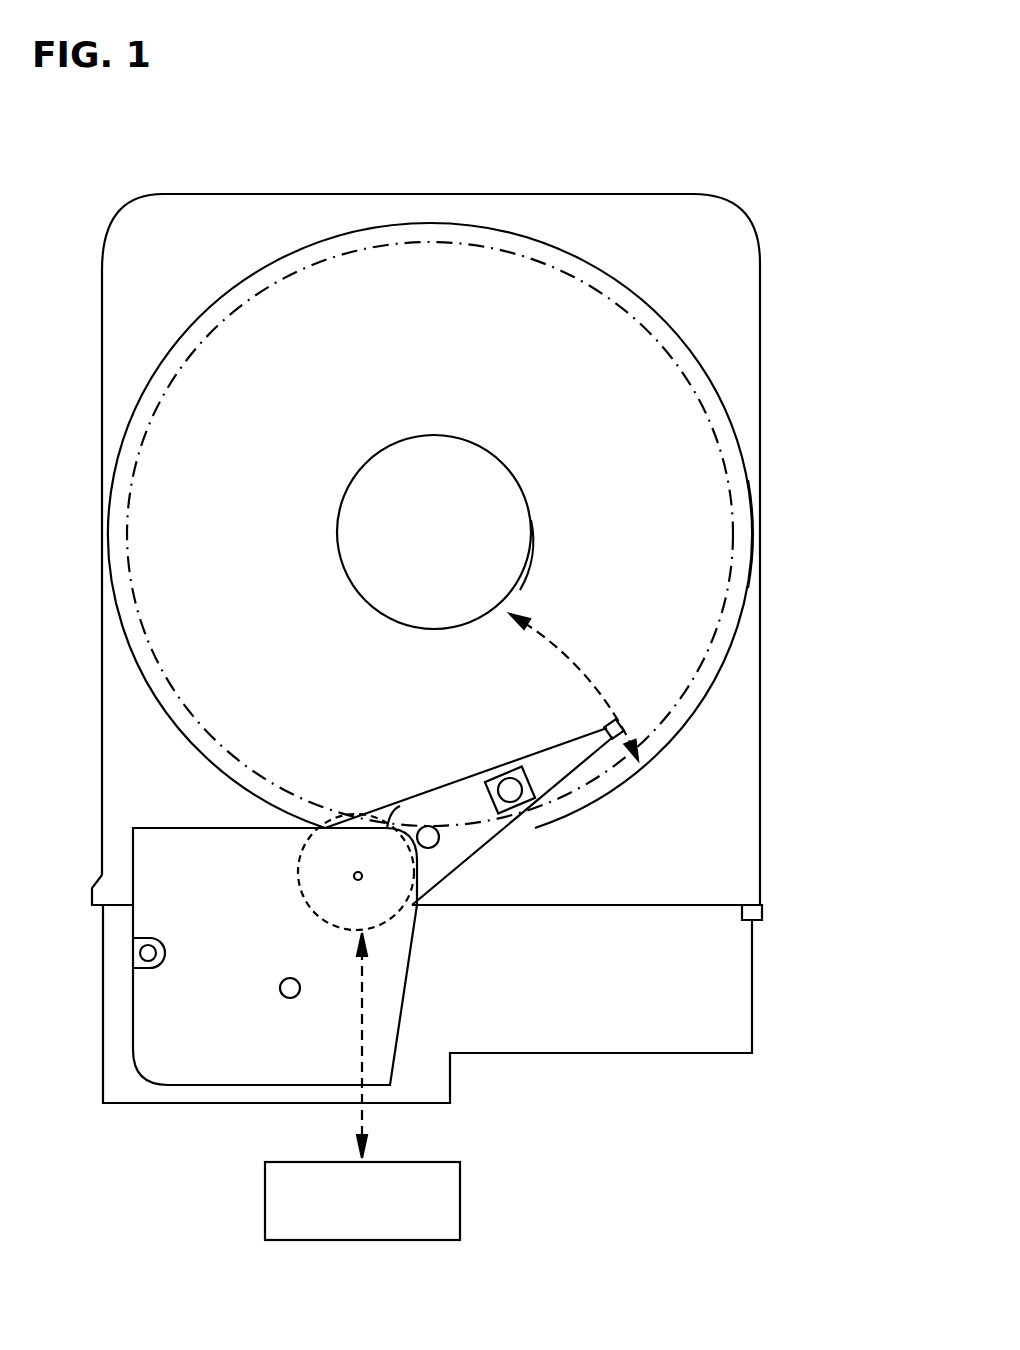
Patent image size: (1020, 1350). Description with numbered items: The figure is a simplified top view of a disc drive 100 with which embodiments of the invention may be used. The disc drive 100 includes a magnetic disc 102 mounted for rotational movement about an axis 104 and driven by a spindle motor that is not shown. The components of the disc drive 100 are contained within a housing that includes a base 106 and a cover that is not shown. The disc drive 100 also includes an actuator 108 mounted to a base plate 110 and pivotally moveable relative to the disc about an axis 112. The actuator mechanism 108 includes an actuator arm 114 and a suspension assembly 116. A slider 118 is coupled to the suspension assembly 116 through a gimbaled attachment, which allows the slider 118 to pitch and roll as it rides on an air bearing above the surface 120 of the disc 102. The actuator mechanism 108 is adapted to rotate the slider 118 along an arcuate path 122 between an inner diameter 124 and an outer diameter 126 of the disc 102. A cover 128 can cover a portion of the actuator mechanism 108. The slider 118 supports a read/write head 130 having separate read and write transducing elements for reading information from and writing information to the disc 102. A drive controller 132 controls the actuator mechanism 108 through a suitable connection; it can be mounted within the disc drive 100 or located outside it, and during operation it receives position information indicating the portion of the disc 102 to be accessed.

The disc drive 100 is at (376, 140).
The magnetic disc 102 is at (413, 363).
The axis 104 is at (411, 538).
The base 106 is at (760, 323).
The actuator 108 is at (459, 817).
The base plate 110 is at (672, 1053).
The axis 112 is at (353, 876).
The actuator arm 114 is at (453, 853).
The suspension assembly 116 is at (552, 750).
The slider 118 is at (610, 722).
The surface 120 is at (683, 508).
The arcuate path 122 is at (547, 633).
The inner diameter 124 is at (532, 532).
The outer diameter 126 is at (733, 548).
The cover 128 is at (230, 1057).
The read/write head 130 is at (622, 718).
The drive controller 132 is at (460, 1188).